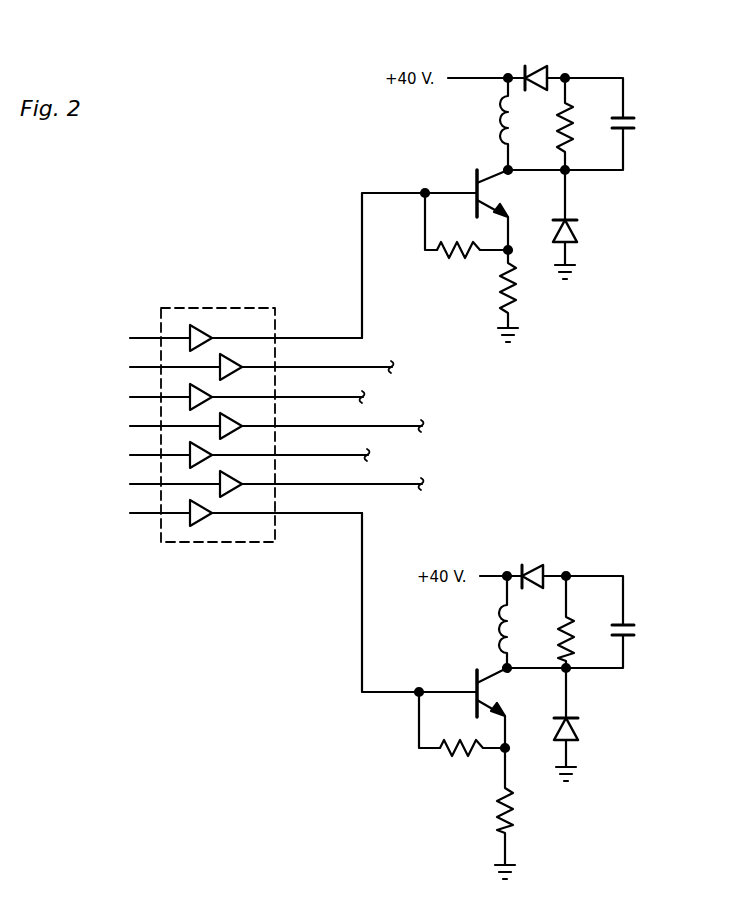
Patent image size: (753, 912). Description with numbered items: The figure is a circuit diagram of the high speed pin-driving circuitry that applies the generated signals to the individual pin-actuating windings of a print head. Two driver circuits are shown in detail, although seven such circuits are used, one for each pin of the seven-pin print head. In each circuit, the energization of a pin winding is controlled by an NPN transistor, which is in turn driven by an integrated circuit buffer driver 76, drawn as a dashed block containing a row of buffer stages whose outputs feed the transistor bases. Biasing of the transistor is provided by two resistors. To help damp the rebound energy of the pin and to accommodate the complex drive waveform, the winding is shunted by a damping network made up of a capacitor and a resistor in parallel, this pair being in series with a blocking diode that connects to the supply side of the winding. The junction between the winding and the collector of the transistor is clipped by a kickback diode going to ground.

The integrated circuit buffer driver 76 is at (218, 308).